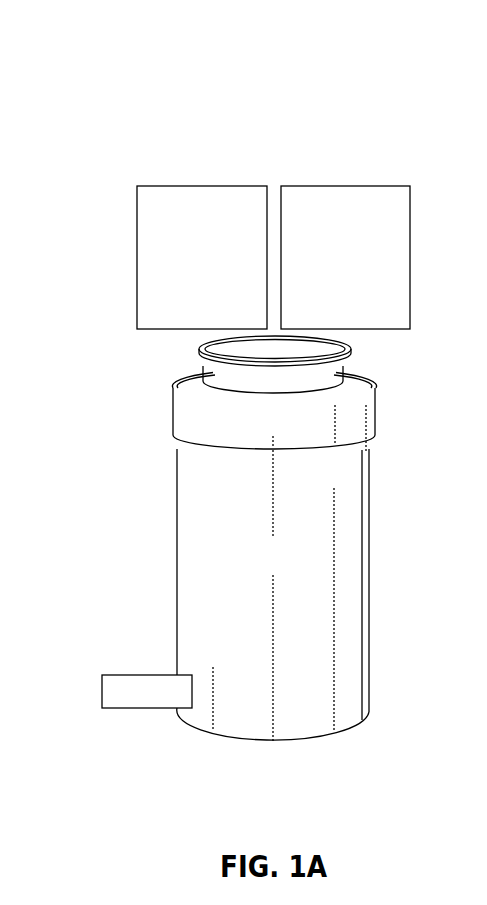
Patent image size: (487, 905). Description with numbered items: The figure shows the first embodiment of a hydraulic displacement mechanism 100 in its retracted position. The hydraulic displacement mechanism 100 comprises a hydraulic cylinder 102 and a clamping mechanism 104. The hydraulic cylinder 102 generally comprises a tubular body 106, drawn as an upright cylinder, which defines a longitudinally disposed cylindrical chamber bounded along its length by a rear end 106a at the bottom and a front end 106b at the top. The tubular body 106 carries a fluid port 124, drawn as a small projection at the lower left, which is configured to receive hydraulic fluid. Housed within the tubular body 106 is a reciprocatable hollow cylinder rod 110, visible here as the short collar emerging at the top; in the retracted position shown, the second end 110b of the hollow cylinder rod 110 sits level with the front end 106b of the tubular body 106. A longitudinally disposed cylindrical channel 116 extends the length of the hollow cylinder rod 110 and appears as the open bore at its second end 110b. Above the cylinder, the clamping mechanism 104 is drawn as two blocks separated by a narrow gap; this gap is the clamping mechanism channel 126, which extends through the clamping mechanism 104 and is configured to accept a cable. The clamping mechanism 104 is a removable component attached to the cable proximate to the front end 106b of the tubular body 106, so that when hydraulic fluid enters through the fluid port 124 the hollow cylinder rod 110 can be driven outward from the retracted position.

The hydraulic displacement mechanism 100 is at (102, 151).
The hydraulic cylinder 102 is at (382, 577).
The clamping mechanism 104 is at (297, 183).
The tubular body 106 is at (295, 568).
The rear end 106a is at (273, 745).
The front end 106b is at (358, 382).
The hollow cylinder rod 110 is at (200, 377).
The second end 110b is at (347, 345).
The cylindrical channel 116 is at (248, 348).
The fluid port 124 is at (147, 709).
The clamping mechanism channel 126 is at (277, 252).